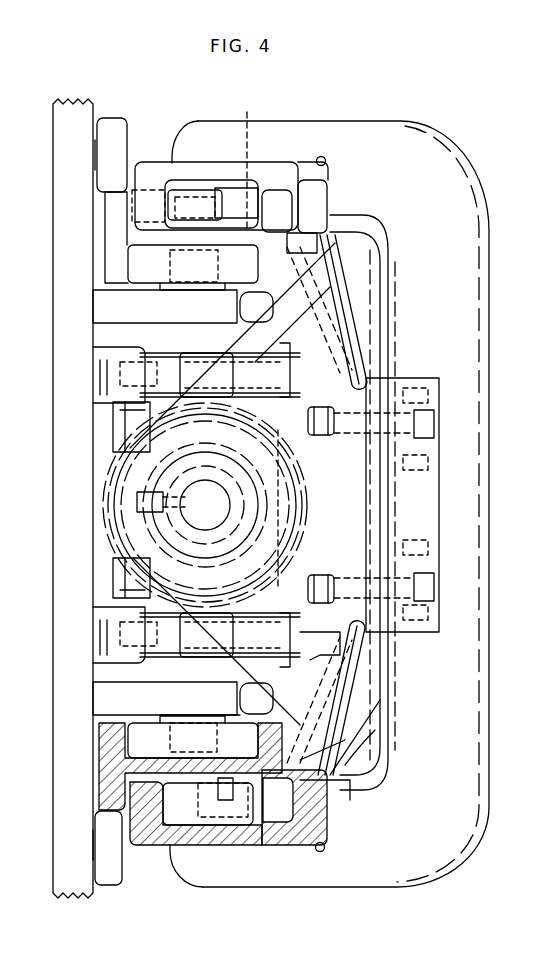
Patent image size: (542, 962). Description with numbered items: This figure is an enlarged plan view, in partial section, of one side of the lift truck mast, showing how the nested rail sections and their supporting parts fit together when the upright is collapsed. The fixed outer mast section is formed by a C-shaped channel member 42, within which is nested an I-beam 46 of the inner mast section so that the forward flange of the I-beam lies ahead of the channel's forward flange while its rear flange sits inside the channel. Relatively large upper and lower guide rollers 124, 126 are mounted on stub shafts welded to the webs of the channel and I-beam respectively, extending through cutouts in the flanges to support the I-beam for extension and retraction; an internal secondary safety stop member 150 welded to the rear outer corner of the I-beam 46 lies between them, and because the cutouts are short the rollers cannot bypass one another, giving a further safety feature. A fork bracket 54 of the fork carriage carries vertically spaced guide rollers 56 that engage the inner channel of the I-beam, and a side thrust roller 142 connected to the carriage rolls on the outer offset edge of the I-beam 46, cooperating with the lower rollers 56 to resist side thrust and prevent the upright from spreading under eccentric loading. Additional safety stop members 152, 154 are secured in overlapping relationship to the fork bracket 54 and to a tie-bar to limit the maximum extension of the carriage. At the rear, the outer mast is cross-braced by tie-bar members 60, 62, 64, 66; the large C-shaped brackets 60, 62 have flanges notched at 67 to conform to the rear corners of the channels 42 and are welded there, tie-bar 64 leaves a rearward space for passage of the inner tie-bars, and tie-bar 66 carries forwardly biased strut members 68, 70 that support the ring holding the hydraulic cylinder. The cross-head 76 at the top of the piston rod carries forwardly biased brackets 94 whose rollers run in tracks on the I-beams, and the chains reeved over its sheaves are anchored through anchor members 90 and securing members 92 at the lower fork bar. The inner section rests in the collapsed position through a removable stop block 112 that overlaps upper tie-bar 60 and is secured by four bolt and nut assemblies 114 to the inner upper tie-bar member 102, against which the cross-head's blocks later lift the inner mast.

The channel member 42 is at (190, 170).
The I-beam 46 is at (118, 228).
The fork bracket 54 is at (110, 305).
The guide roller 56 is at (135, 262).
The tie-bar member 60 is at (372, 143).
The tie-bar member 62 is at (471, 160).
The tie-bar member 64 is at (332, 765).
The tie-bar member 66 is at (345, 778).
The notch 67 is at (326, 158).
The strut member 68 is at (290, 588).
The strut member 70 is at (262, 672).
The cross-head 76 is at (312, 445).
The anchor member 90 is at (105, 348).
The securing member 92 is at (95, 388).
The bracket 94 is at (355, 335).
The upper tie-bar member 102 is at (345, 635).
The stop block 112 is at (420, 512).
The bolt and nut assembly 114 is at (440, 425).
The upper guide roller 124 is at (148, 205).
The lower guide roller 126 is at (282, 185).
The side thrust roller 142 is at (112, 137).
The secondary safety stop member 150 is at (263, 854).
The safety stop member 152 is at (236, 698).
The safety stop member 154 is at (252, 748).